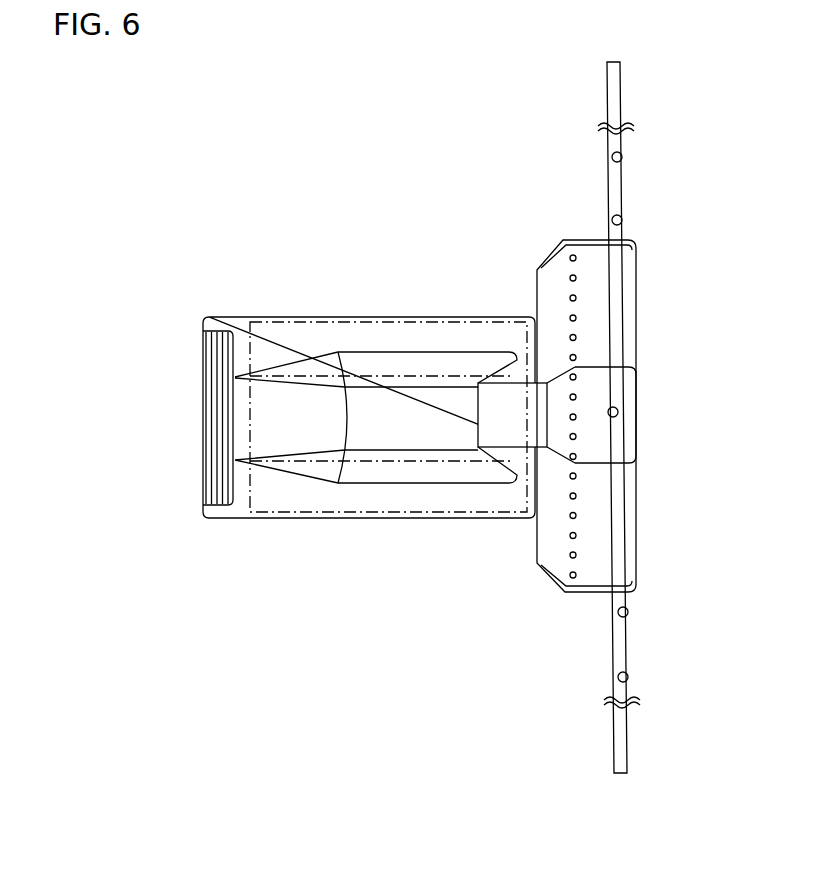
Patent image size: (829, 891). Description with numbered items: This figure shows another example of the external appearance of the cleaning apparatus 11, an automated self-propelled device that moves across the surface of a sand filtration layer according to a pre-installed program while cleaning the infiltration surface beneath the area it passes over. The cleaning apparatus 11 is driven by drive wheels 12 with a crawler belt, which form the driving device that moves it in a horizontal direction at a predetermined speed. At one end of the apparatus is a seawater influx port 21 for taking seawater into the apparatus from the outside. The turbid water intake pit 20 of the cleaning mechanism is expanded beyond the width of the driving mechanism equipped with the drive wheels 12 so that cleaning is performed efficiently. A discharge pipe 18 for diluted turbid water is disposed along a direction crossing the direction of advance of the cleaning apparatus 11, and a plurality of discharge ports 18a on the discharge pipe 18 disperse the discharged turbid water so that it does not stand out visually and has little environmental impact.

The cleaning apparatus 11 is at (455, 532).
The drive wheels 12 is at (296, 333).
The discharge pipe 18 is at (613, 190).
The discharge ports 18a is at (622, 157).
The turbid water intake pit 20 is at (540, 267).
The seawater influx port 21 is at (218, 354).